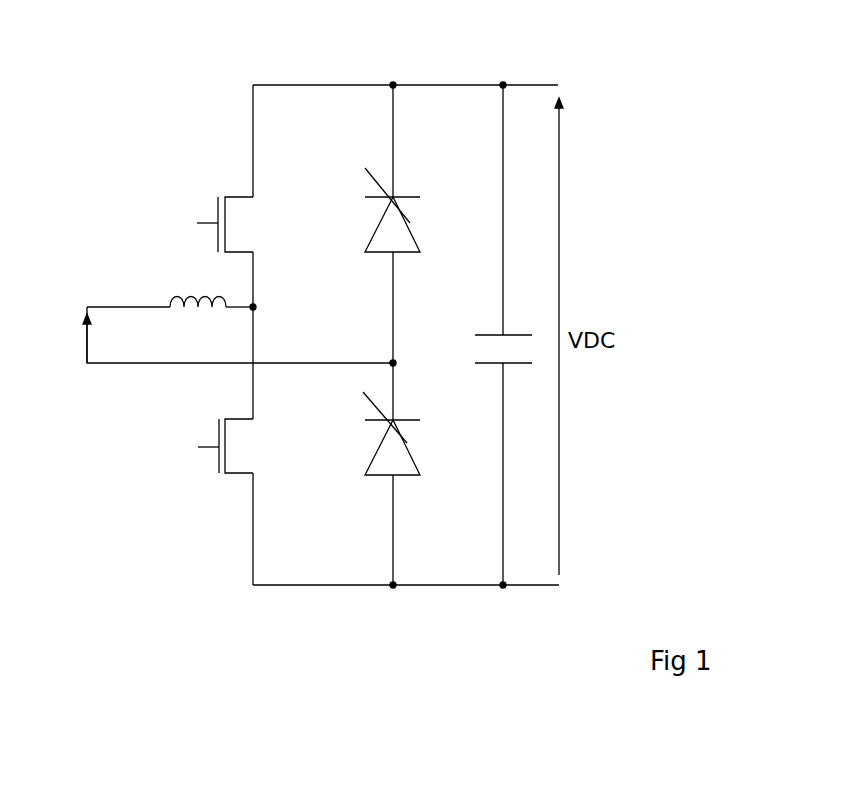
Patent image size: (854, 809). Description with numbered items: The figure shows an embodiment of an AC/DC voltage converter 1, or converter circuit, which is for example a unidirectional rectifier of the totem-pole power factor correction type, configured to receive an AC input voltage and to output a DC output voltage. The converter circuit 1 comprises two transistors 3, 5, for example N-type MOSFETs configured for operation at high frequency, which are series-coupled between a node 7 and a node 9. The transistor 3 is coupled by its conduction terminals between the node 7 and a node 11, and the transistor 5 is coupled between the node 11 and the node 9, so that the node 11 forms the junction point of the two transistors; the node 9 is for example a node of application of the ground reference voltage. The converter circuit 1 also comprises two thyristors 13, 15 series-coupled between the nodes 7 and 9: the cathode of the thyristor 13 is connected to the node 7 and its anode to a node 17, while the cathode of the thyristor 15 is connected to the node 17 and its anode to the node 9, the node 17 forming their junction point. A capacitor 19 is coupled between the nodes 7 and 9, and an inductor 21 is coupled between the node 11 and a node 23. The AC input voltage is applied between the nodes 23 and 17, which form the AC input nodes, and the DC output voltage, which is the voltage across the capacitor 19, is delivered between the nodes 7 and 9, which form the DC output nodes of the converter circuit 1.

The AC/DC voltage converter 1 is at (633, 85).
The transistor 3 is at (232, 196).
The transistor 5 is at (240, 475).
The node 7 is at (393, 84).
The node 9 is at (393, 587).
The node 11 is at (256, 307).
The thyristor 13 is at (410, 223).
The thyristor 15 is at (405, 442).
The node 17 is at (395, 361).
The capacitor 19 is at (510, 334).
The inductor 21 is at (176, 300).
The node 23 is at (87, 304).